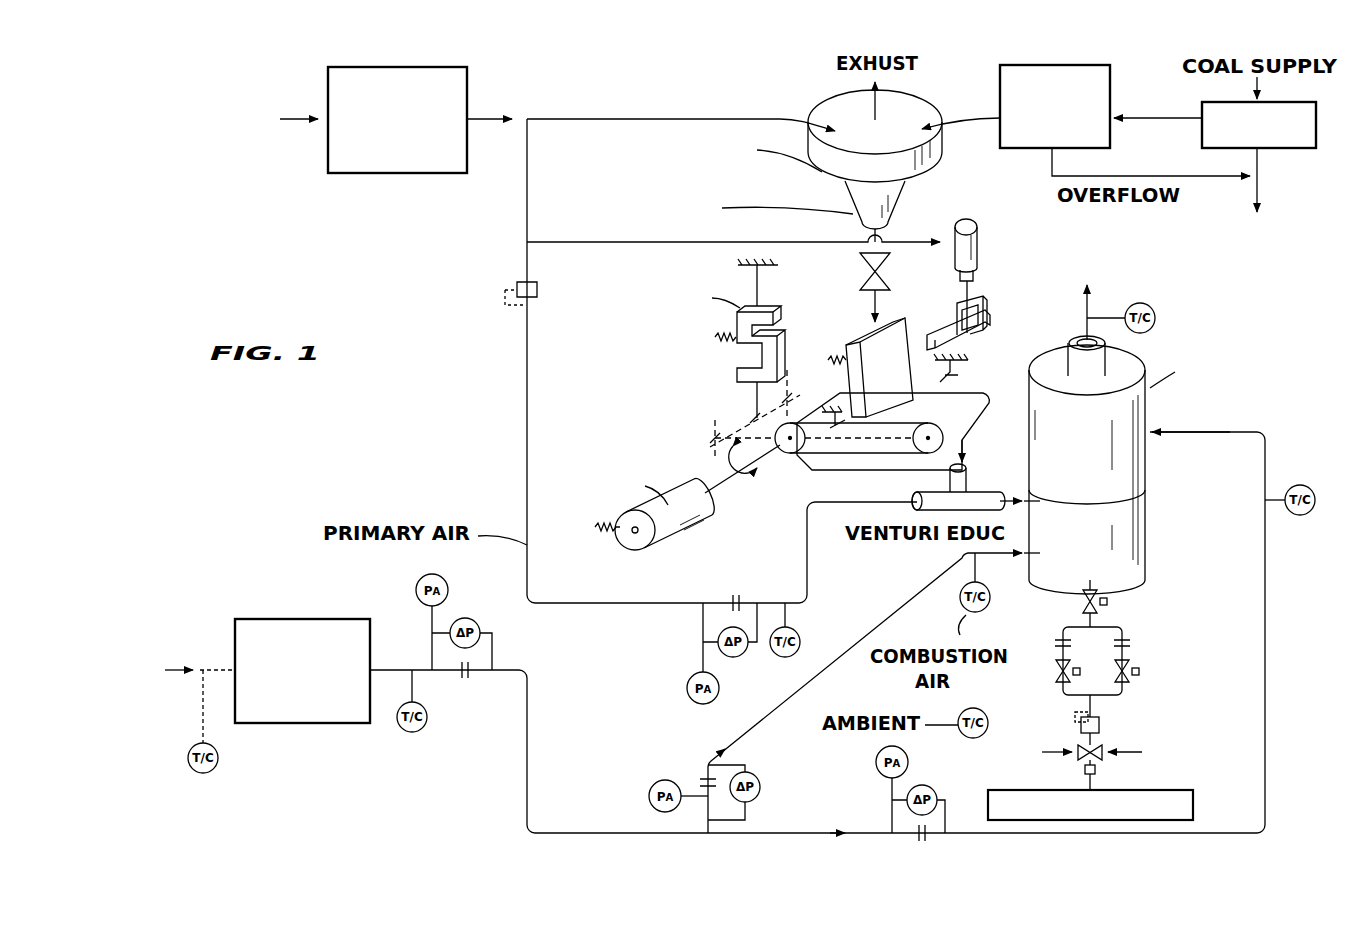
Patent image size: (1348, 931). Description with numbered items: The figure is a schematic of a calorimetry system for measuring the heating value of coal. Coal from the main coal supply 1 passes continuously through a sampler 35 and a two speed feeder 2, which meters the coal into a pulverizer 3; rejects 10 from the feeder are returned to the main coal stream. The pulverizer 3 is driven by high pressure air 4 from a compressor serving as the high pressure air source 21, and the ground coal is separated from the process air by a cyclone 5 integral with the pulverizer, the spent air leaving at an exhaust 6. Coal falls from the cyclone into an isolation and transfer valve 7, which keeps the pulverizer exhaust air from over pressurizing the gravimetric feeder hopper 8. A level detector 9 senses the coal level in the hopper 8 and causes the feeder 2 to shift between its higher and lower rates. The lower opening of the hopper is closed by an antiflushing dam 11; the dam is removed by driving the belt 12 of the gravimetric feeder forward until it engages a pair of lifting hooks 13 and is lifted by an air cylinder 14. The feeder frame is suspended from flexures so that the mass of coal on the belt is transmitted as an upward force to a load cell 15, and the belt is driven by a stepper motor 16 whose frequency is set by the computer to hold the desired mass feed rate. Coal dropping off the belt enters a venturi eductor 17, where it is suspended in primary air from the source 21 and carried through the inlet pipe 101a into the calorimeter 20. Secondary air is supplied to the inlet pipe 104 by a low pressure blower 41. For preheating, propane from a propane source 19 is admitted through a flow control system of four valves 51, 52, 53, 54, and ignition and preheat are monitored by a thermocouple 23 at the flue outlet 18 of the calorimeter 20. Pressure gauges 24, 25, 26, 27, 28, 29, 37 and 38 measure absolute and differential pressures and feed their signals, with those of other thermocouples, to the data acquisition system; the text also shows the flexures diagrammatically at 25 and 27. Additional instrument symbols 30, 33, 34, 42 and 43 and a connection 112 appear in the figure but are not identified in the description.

The main coal supply 1 is at (1172, 118).
The two speed feeder 2 is at (1000, 90).
The pulverizer 3 is at (835, 172).
The high pressure air 4 is at (588, 118).
The cyclone 5 is at (898, 205).
The exhaust 6 is at (871, 110).
The isolation and transfer valve 7 is at (860, 272).
The gravimetric feeder hopper 8 is at (905, 322).
The level detector 9 is at (831, 356).
The rejects 10 is at (1225, 178).
The antiflushing dam 11 is at (968, 340).
The gravimetric feeder belt 12 is at (985, 415).
The lifting hooks 13 is at (985, 302).
The air cylinder 14 is at (980, 237).
The load cell 15 is at (740, 365).
The stepper motor 16 is at (695, 520).
The venturi eductor 17 is at (929, 490).
The flue outlet 18 is at (1092, 300).
The propane source 19 is at (1170, 790).
The calorimeter 20 is at (1150, 400).
The high pressure air source 21 is at (358, 173).
The thermocouple 23 is at (1152, 308).
The pressure gauge 24 is at (687, 686).
The differential pressure gauge 25 is at (745, 655).
The pressure gauge 26 is at (648, 792).
The differential pressure gauge 27 is at (760, 790).
The pressure gauge 28 is at (876, 760).
The pressure gauge 29 is at (945, 778).
The ambient thermocouple 30 is at (988, 730).
The thermocouple 33 is at (1293, 522).
The thermocouple 34 is at (425, 727).
The sampler 35 is at (1290, 148).
The pressure gauge 37 is at (970, 365).
The pressure gauge 38 is at (838, 430).
The low pressure air supply source 41 is at (300, 619).
The thermocouple 42 is at (218, 752).
The thermocouple 43 is at (960, 605).
The valve 51 is at (1100, 750).
The valve 52 is at (1128, 676).
The valve 53 is at (1056, 675).
The valve 54 is at (1082, 604).
The inlet pipe 101a is at (1035, 500).
The inlet pipe 104 is at (1035, 550).
The calorimeter inlet line 112 is at (1150, 440).